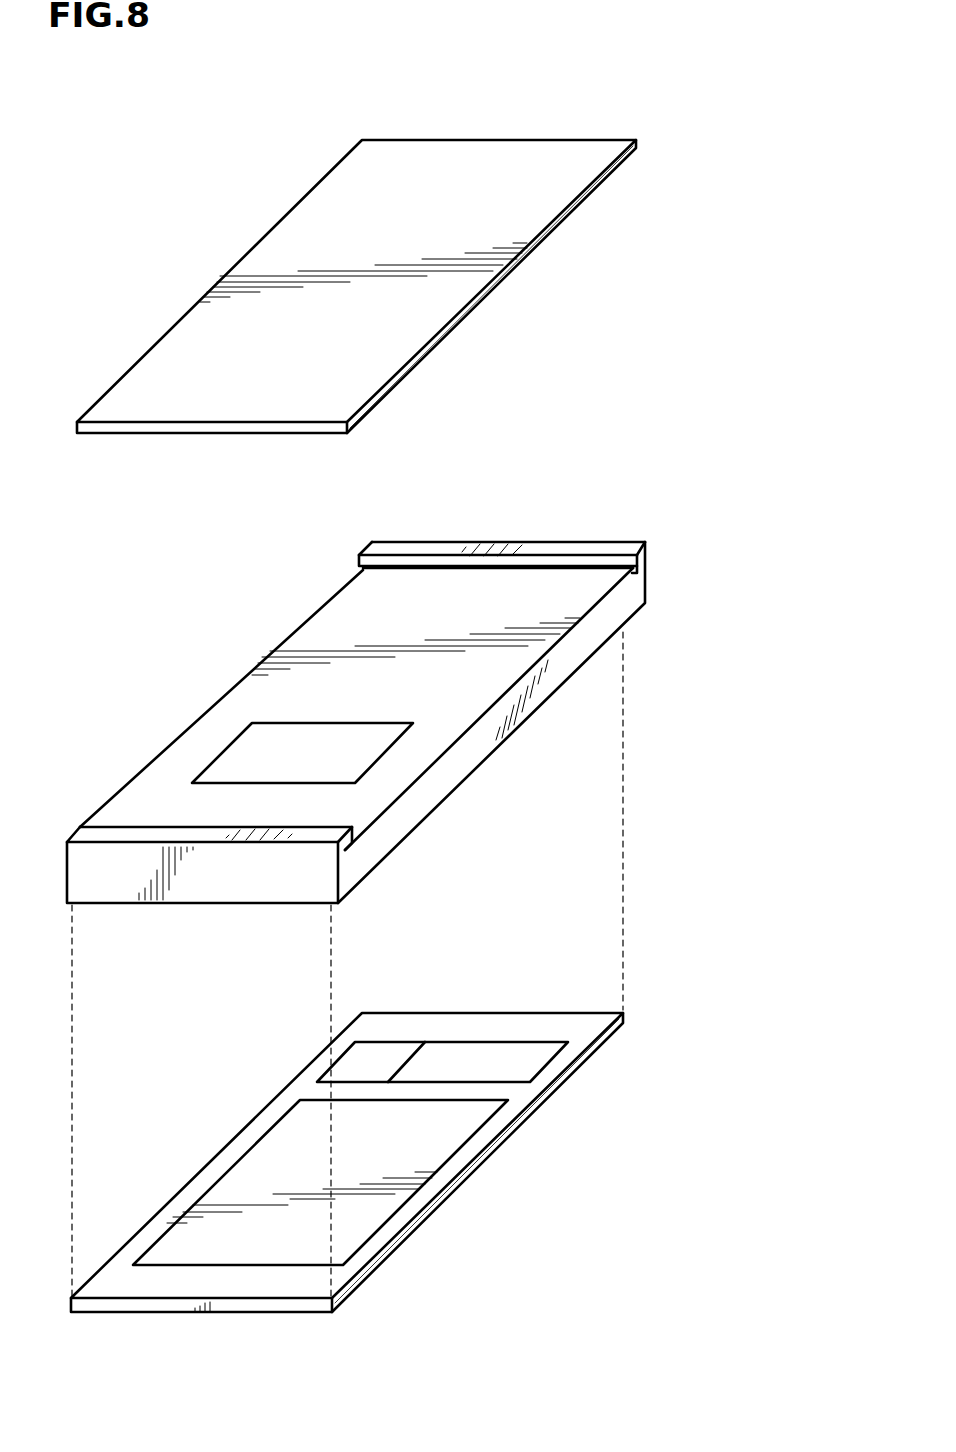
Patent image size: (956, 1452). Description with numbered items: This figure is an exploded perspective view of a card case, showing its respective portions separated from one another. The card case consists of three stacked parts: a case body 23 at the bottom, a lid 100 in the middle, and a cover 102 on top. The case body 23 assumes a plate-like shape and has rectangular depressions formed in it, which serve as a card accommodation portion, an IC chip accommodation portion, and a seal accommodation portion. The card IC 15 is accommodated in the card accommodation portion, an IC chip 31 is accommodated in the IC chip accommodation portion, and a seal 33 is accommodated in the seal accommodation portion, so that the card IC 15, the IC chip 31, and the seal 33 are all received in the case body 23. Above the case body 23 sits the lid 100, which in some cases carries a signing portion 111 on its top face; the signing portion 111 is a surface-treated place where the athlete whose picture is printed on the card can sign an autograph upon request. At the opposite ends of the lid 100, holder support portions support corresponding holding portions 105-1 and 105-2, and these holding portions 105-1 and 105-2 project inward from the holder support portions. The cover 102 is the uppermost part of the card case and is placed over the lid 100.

The cover 102 is at (523, 263).
The lid 100 is at (593, 598).
The holding portion 105-1 is at (368, 543).
The holding portion 105-2 is at (90, 830).
The signing portion 111 is at (407, 733).
The case body 23 is at (623, 1013).
The seal 33 is at (550, 1067).
The IC chip 31 is at (385, 1050).
The card IC 15 is at (475, 1140).